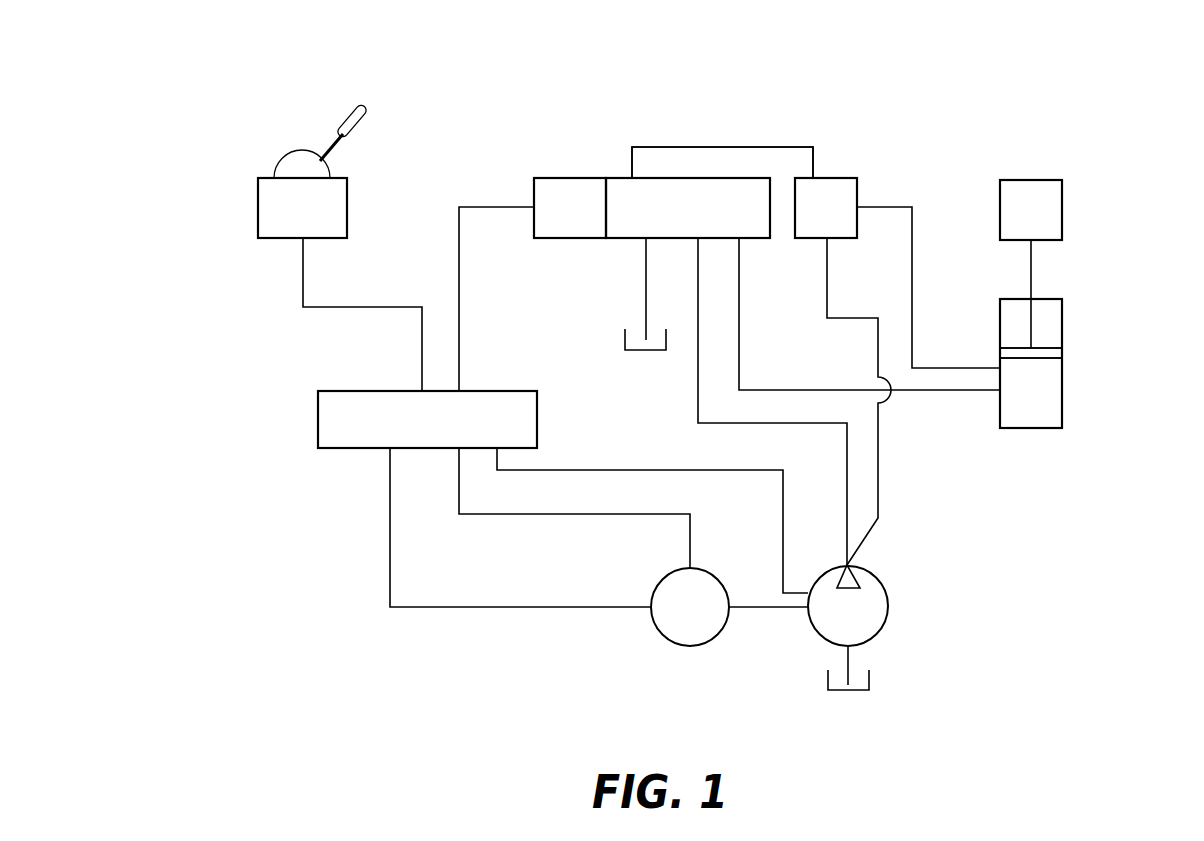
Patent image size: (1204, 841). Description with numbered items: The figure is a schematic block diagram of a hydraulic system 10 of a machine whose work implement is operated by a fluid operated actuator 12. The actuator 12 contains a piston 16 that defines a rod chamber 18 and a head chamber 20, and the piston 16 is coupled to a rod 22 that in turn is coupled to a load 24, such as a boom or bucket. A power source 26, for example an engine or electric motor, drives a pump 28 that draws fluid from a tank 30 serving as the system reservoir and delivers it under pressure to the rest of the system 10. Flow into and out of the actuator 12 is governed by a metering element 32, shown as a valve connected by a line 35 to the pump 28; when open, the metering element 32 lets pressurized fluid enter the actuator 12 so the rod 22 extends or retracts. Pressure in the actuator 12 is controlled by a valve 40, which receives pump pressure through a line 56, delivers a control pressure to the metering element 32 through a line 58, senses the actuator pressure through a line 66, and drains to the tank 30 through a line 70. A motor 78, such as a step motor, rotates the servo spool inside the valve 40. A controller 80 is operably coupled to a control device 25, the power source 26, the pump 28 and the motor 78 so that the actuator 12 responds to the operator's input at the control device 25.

The hydraulic system 10 is at (711, 64).
The fluid operated actuator 12 is at (1098, 342).
The piston 16 is at (1062, 348).
The rod chamber 18 is at (1062, 318).
The head chamber 20 is at (1062, 390).
The rod 22 is at (1031, 255).
The load 24 is at (1062, 198).
The control device 25 is at (258, 207).
The power source 26 is at (717, 636).
The pump 28 is at (886, 598).
The tank 30 is at (622, 345).
The metering element 32 is at (843, 178).
The line 35 is at (827, 273).
The valve 40 is at (652, 162).
The line 56 is at (697, 415).
The line 58 is at (790, 147).
The line 66 is at (740, 362).
The line 70 is at (646, 290).
The motor 78 is at (558, 178).
The controller 80 is at (318, 422).